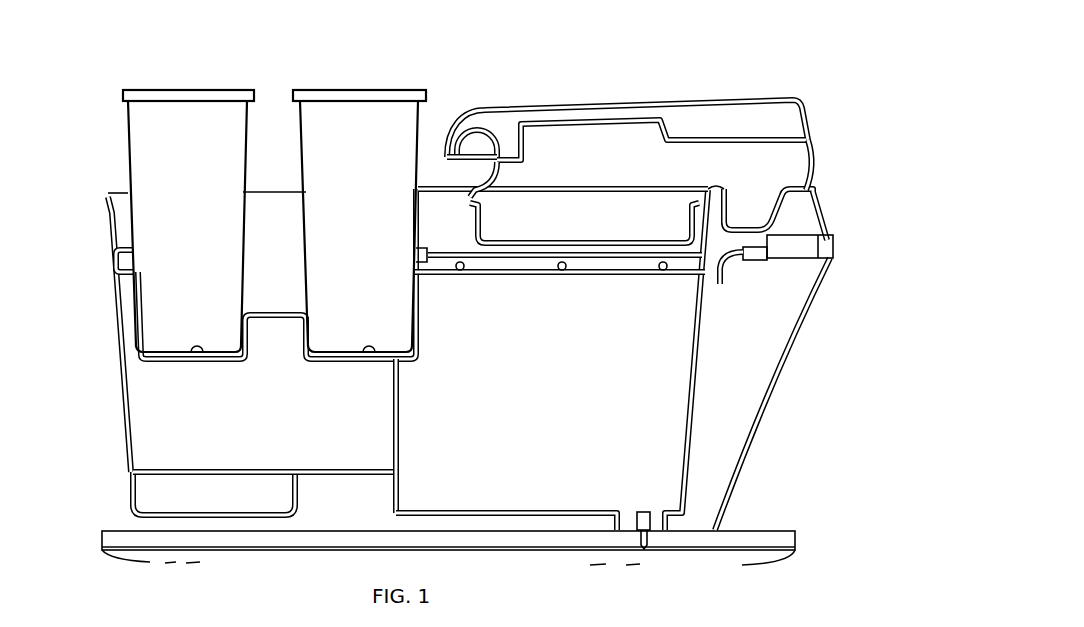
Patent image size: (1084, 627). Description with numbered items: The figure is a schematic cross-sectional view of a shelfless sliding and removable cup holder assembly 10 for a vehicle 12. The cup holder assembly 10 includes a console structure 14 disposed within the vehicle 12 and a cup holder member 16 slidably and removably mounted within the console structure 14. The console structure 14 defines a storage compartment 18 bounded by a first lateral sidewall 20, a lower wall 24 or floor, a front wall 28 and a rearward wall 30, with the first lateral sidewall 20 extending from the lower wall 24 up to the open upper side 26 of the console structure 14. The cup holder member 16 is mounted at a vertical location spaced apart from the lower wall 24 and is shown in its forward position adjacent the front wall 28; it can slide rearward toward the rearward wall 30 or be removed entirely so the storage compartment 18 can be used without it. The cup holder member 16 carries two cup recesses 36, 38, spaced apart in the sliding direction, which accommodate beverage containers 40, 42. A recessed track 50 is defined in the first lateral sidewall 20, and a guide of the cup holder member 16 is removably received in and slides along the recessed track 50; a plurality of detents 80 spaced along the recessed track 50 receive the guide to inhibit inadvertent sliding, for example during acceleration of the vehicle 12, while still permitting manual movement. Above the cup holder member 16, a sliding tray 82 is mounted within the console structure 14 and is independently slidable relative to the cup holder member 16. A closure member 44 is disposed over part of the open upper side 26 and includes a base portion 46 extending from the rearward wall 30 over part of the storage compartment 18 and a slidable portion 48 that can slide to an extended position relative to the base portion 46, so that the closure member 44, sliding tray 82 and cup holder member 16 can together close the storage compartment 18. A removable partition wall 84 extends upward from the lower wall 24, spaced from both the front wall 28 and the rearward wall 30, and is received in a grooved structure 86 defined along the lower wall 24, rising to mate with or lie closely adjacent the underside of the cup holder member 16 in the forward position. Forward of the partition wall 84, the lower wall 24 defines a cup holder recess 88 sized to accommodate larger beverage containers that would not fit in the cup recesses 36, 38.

The sliding and removable cup holder assembly 10 is at (148, 68).
The vehicle 12 is at (765, 540).
The console structure 14 is at (720, 378).
The cup holder member 16 is at (430, 320).
The storage compartment 18 is at (535, 458).
The first lateral sidewall 20 is at (632, 392).
The lower wall 24 is at (470, 512).
The open upper side 26 is at (108, 197).
The front wall 28 is at (115, 300).
The rearward wall 30 is at (688, 452).
The cup recess 36 is at (197, 357).
The cup recess 38 is at (376, 360).
The beverage container 40 is at (131, 107).
The beverage container 42 is at (316, 150).
The closure member 44 is at (680, 98).
The base portion 46 is at (812, 150).
The slidable portion 48 is at (800, 118).
The recessed track 50 is at (602, 258).
The detents 80 is at (460, 270).
The sliding tray 82 is at (480, 217).
The partition wall 84 is at (393, 415).
The grooved structure 86 is at (420, 458).
The cup holder recess 88 is at (172, 505).